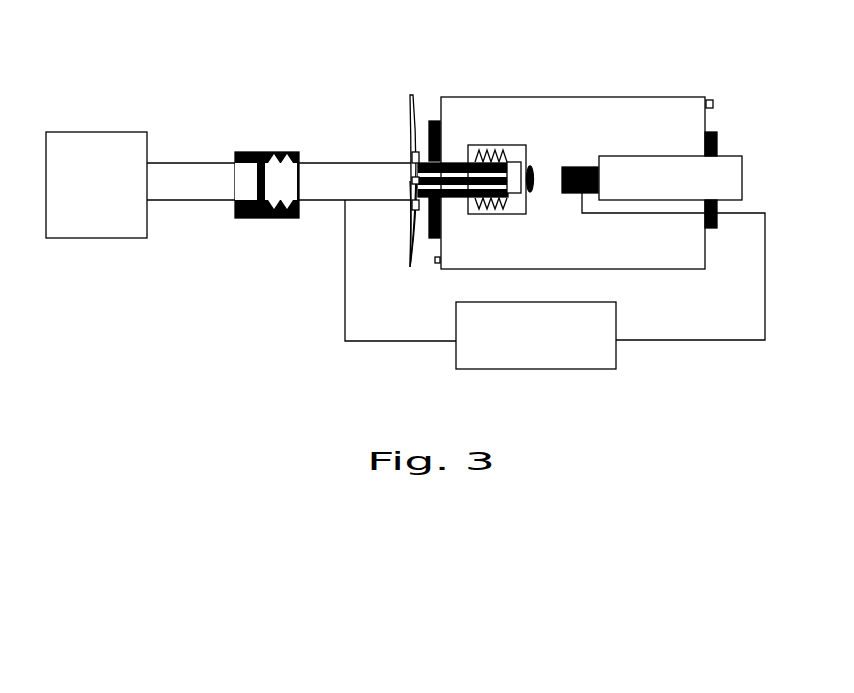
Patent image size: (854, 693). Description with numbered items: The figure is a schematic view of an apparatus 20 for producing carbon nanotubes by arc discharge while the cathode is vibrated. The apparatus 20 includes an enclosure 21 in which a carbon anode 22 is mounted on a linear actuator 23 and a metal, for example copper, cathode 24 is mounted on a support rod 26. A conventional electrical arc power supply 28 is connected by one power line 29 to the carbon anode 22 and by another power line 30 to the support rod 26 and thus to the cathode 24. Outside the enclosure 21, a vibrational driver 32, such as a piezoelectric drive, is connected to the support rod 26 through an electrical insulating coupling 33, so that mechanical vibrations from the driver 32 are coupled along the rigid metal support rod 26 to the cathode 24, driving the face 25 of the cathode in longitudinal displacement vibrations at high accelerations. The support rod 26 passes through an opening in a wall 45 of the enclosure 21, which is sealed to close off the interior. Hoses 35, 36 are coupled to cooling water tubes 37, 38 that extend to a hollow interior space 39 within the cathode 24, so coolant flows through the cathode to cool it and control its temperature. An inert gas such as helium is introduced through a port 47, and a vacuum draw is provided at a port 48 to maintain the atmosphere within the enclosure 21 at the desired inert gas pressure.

The apparatus 20 is at (605, 154).
The enclosure 21 is at (513, 98).
The carbon anode 22 is at (590, 167).
The linear actuator 23 is at (665, 156).
The cathode 24 is at (518, 200).
The face of the cathode 25 is at (527, 205).
The support rod 26 is at (335, 160).
The electrical arc power supply 28 is at (617, 313).
The power line 29 is at (763, 283).
The power line 30 is at (343, 333).
The vibrational driver 32 is at (95, 130).
The electrical insulating coupling 33 is at (273, 218).
The hose 35 is at (405, 120).
The hose 36 is at (405, 242).
The cooling water tube 37 is at (412, 158).
The cooling water tube 38 is at (412, 205).
The hollow interior space 39 is at (527, 158).
The wall of the enclosure 45 is at (433, 121).
The port 47 is at (438, 263).
The port 48 is at (713, 102).